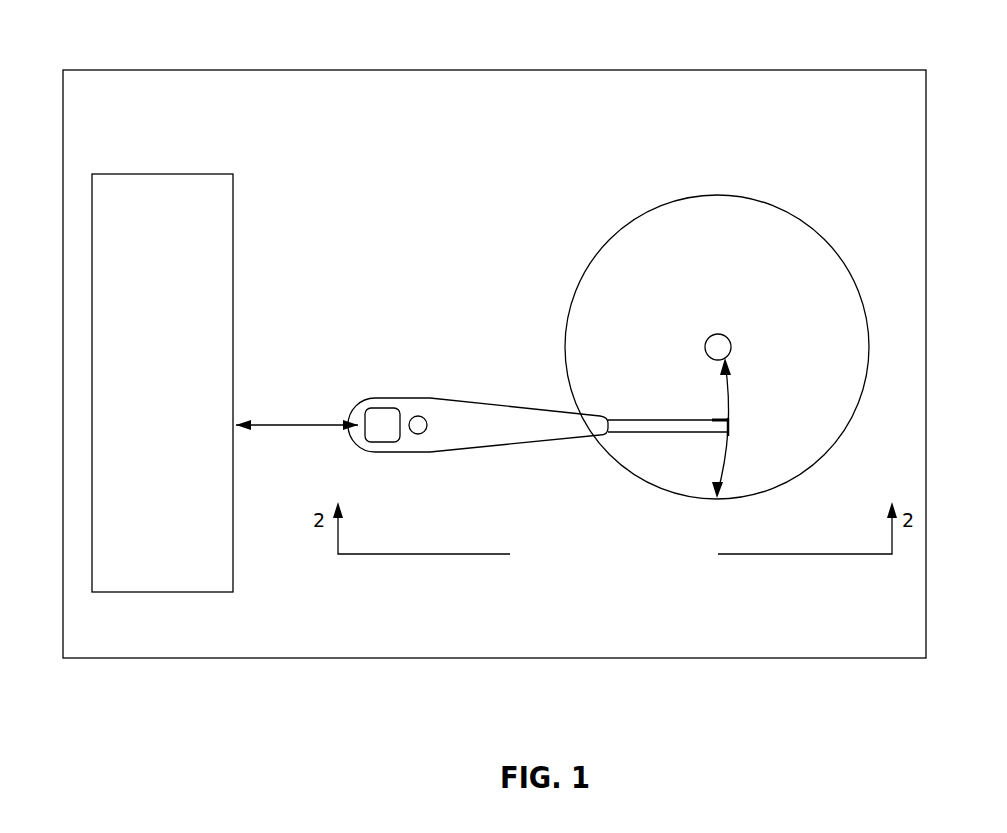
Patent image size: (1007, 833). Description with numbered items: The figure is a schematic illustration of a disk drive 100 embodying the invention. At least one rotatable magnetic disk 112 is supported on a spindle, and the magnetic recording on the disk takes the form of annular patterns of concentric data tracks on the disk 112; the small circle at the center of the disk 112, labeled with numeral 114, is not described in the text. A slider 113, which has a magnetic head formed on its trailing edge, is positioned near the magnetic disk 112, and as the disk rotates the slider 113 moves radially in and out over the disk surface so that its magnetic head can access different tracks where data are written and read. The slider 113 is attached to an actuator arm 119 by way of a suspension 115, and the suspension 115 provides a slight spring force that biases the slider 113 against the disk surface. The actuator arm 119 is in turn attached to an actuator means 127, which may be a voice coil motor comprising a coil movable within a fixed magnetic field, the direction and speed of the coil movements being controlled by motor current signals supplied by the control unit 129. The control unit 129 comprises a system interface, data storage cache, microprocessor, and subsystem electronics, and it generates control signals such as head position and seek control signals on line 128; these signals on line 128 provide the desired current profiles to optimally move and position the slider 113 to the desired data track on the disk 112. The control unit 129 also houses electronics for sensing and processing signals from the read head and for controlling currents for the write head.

The disk drive 100 is at (386, 62).
The control unit 129 is at (101, 198).
The line 128 is at (265, 424).
The actuator arm 119 is at (471, 431).
The actuator means 127 is at (381, 412).
The suspension 115 is at (694, 426).
The slider 113 is at (712, 418).
The magnetic disk 112 is at (793, 213).
The center hub 114 is at (731, 347).